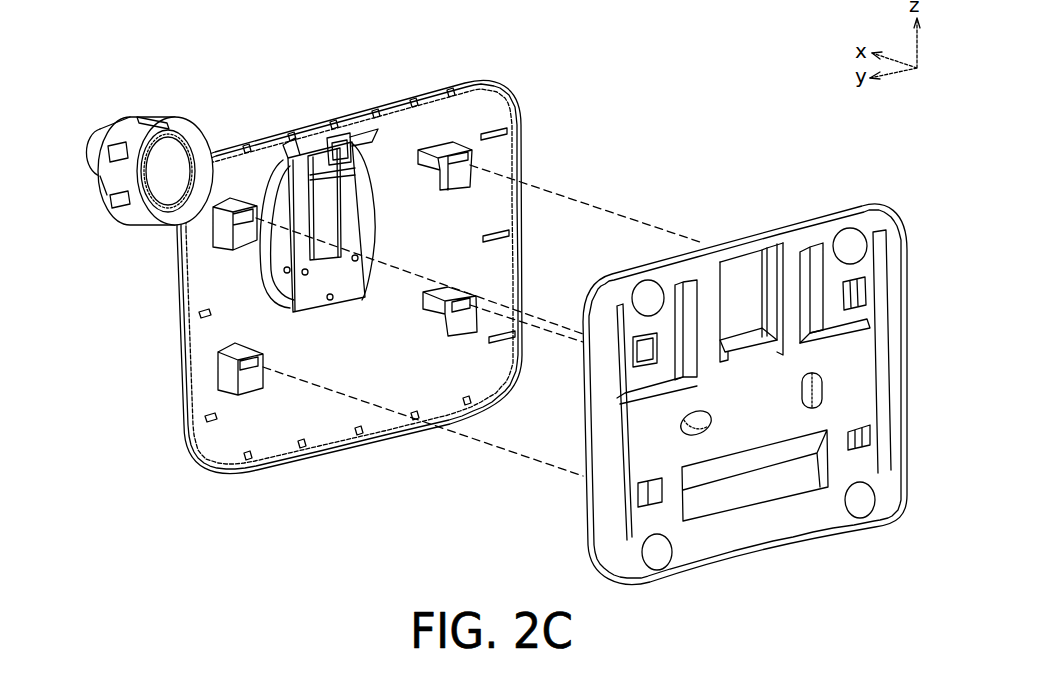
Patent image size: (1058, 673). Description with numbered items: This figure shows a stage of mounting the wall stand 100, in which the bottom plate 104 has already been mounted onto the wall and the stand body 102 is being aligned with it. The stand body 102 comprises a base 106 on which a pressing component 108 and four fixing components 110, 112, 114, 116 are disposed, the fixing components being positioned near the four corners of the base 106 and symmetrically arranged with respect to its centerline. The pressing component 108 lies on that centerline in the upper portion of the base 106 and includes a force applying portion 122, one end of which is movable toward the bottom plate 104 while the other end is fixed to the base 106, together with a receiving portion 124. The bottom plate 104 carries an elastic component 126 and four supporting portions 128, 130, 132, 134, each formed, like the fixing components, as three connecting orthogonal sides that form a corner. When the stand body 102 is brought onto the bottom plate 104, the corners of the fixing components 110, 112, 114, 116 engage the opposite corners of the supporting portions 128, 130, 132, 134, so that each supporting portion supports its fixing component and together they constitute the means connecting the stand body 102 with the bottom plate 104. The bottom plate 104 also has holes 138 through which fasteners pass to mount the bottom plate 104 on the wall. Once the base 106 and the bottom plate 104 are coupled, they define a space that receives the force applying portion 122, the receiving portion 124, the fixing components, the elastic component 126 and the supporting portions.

The wall stand 100 is at (303, 24).
The stand body 102 is at (101, 142).
The bottom plate 104 is at (779, 577).
The base 106 is at (253, 138).
The pressing component 108 is at (368, 220).
The fixing component 110 is at (242, 236).
The fixing component 112 is at (228, 371).
The fixing component 114 is at (462, 178).
The fixing component 116 is at (463, 325).
The force applying portion 122 is at (310, 298).
The receiving portion 124 is at (378, 124).
The elastic component 126 is at (748, 289).
The supporting portion 128 is at (656, 343).
The supporting portion 130 is at (648, 508).
The supporting portion 132 is at (843, 284).
The supporting portion 134 is at (855, 453).
The hole 138 is at (690, 440).